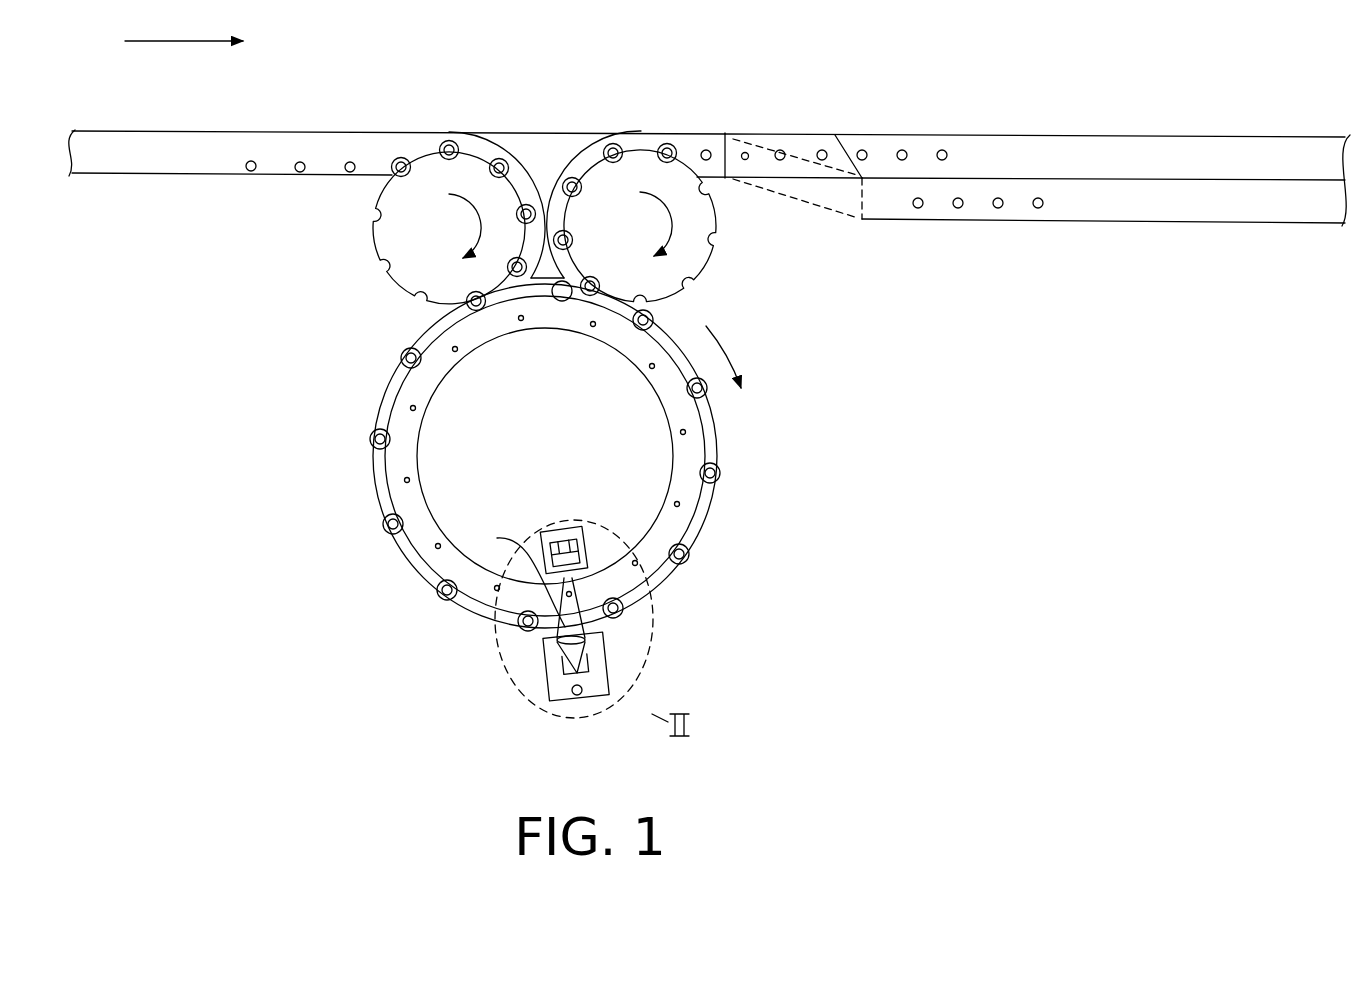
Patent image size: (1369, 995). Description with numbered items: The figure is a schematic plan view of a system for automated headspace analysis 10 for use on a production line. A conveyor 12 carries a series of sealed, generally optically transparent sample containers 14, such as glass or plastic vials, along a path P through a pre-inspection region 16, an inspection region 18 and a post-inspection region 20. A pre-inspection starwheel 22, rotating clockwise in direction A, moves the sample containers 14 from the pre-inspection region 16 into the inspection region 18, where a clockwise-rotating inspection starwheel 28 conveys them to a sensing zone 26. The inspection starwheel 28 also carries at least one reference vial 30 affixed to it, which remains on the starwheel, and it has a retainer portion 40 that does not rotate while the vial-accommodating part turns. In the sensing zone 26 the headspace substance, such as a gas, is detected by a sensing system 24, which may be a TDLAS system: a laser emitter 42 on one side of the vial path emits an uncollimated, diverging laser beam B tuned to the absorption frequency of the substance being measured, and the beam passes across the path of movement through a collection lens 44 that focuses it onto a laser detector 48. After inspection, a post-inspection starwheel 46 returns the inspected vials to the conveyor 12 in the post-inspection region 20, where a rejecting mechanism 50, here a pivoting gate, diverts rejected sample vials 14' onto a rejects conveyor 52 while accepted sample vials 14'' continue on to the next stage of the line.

The system for automated headspace analysis 10 is at (709, 410).
The conveyor 12 is at (362, 142).
The sample containers 14 is at (556, 351).
The rejected sample vials 14' is at (970, 239).
The accepted sample vials 14'' is at (928, 111).
The pre-inspection region 16 is at (317, 186).
The inspection region 18 is at (368, 540).
The post-inspection region 20 is at (886, 126).
The pre-inspection starwheel 22 is at (386, 272).
The sensing system 24 is at (586, 644).
The sensing zone 26 is at (590, 612).
The inspection starwheel 28 is at (708, 513).
The reference vial 30 is at (404, 480).
The retainer portion 40 is at (449, 603).
The laser emitter 42 is at (583, 558).
The collection lens 44 is at (597, 637).
The post-inspection starwheel 46 is at (714, 236).
The laser detector 48 is at (574, 695).
The rejecting mechanism 50 is at (800, 140).
The rejects conveyor 52 is at (1092, 216).